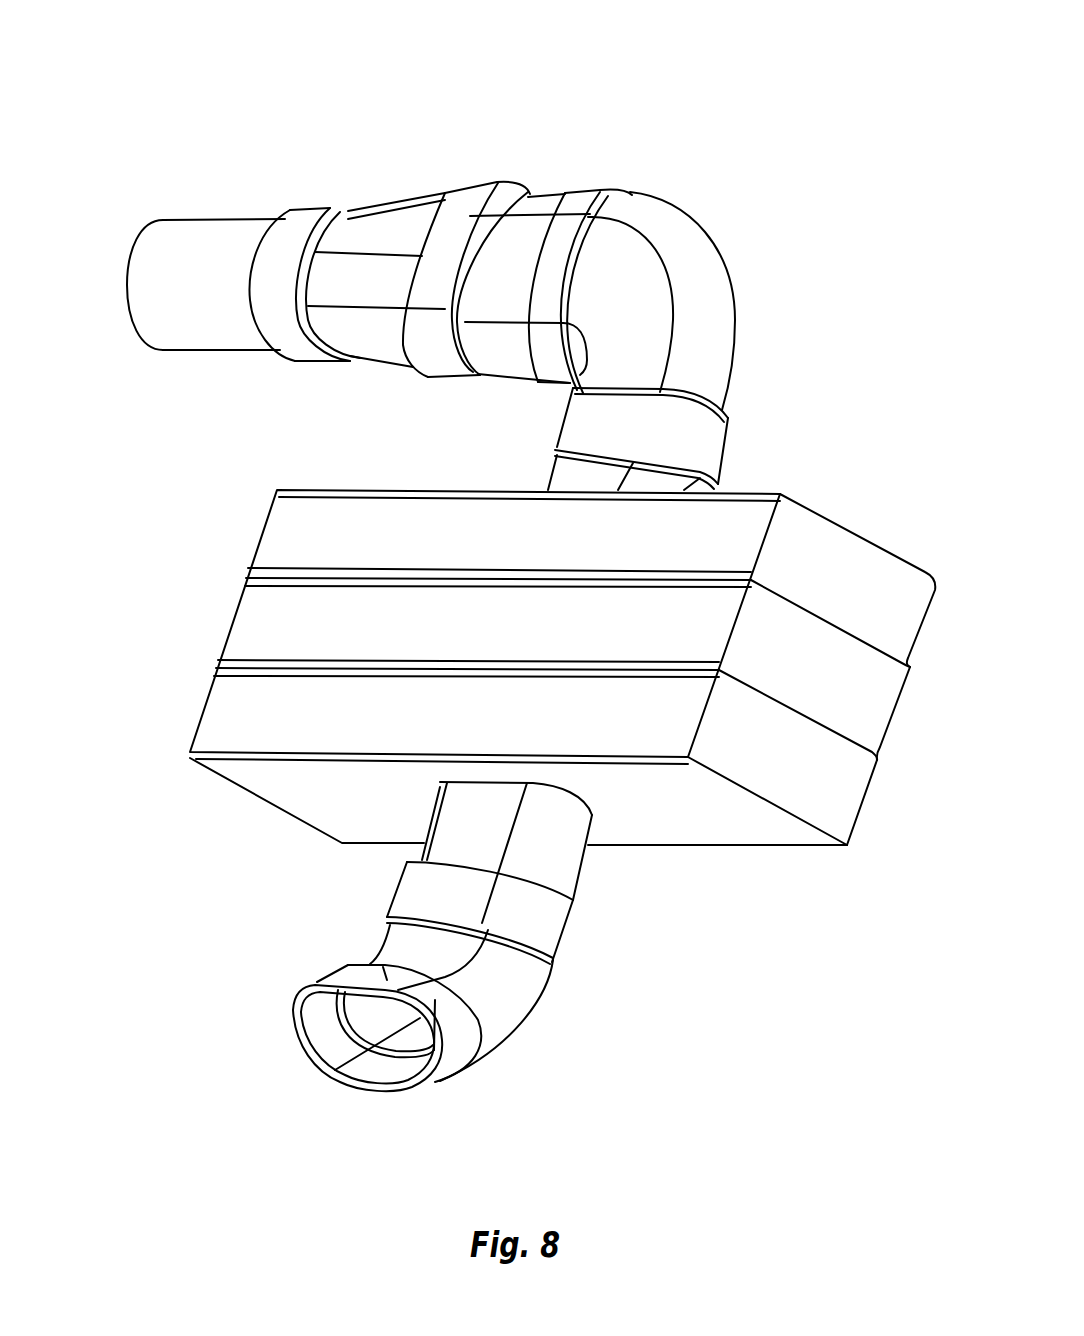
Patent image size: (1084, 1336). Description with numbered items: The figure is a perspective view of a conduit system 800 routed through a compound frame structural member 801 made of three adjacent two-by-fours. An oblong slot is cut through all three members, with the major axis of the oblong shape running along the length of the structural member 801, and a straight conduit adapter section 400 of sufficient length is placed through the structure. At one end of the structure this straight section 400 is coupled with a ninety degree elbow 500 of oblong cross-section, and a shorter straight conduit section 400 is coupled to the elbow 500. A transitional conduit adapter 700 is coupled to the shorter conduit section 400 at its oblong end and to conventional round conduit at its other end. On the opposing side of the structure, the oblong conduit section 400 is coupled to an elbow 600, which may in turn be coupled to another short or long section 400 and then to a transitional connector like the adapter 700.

The conduit system 800 is at (558, 127).
The structural member 801 is at (205, 623).
The transitional conduit adapter 700 is at (437, 195).
The 90 degree elbow 500 is at (733, 337).
The straight conduit adapter section 400 is at (503, 373).
The elbow 600 is at (380, 963).